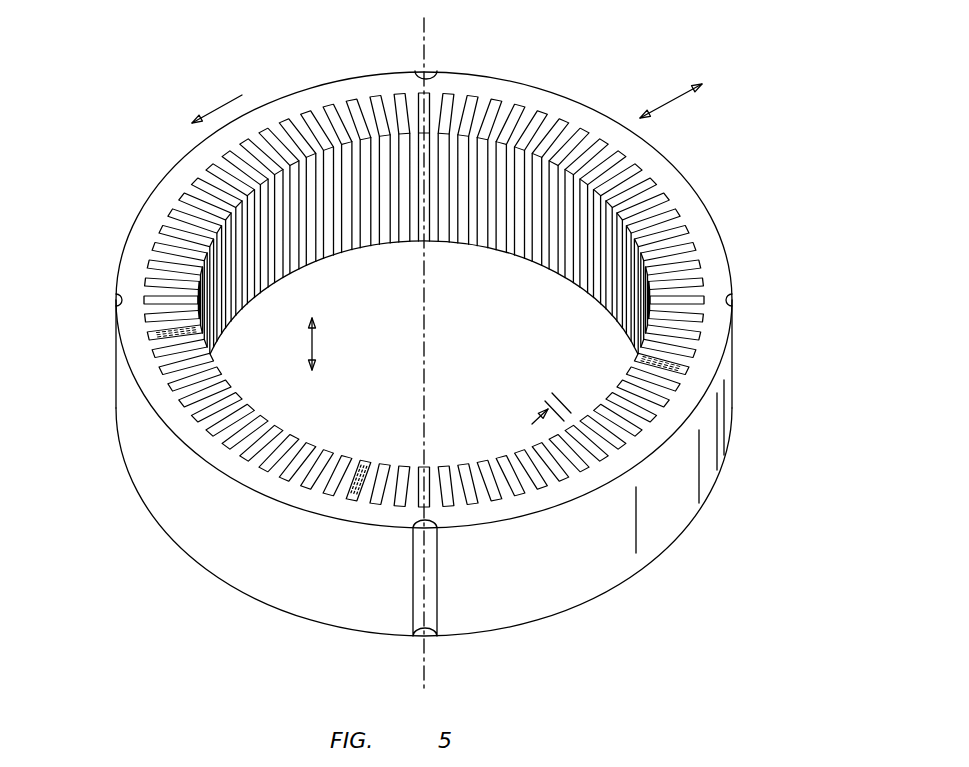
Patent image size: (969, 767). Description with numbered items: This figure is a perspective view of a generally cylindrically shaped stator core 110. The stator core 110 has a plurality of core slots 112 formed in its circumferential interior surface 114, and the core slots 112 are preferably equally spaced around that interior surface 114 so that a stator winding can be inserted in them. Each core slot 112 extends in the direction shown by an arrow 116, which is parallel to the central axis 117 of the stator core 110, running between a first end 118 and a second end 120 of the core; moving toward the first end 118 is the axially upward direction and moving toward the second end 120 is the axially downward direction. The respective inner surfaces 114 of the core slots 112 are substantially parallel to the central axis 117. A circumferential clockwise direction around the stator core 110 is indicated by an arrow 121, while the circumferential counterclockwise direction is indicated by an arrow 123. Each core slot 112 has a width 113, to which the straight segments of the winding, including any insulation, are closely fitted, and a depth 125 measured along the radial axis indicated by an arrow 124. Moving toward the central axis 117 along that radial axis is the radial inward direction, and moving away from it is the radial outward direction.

The stator core 110 is at (157, 97).
The core slots 112 is at (167, 208).
The width of the core slots 113 is at (563, 397).
The circumferential interior surface 114 is at (468, 243).
The arrow indicating axial direction 116 is at (315, 347).
The central axis 117 is at (428, 658).
The first end 118 is at (593, 122).
The second end 120 is at (614, 597).
The arrow indicating circumferential clockwise direction 121 is at (360, 58).
The arrow indicating circumferential counterclockwise direction 123 is at (227, 100).
The arrow indicating radial axis 124 is at (676, 98).
The depth of the core slots 125 is at (172, 333).